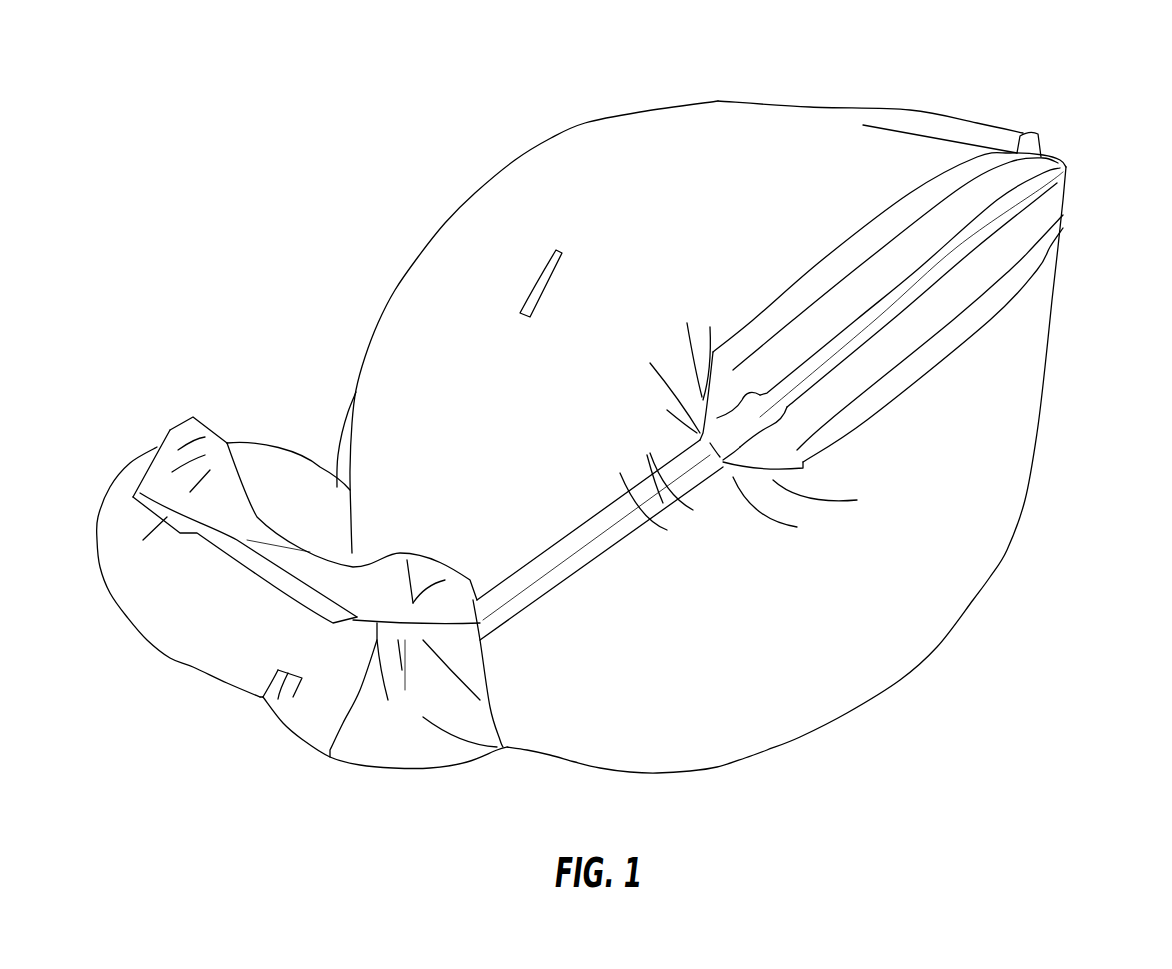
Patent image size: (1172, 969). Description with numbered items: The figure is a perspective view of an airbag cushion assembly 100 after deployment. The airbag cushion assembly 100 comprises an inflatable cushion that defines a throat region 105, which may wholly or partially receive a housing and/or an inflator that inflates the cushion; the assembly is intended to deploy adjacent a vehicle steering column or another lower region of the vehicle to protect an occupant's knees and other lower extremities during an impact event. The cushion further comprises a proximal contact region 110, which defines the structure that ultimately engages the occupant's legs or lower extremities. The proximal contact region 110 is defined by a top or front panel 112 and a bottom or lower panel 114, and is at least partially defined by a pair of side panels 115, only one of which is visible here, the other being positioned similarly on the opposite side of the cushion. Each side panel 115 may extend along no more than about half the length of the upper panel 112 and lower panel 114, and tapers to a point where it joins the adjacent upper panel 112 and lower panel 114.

The airbag cushion assembly 100 is at (1050, 91).
The throat region 105 is at (308, 736).
The proximal contact region 110 is at (692, 101).
The top or front panel 112 is at (484, 203).
The bottom or lower panel 114 is at (928, 635).
The side panel 115 is at (1022, 230).